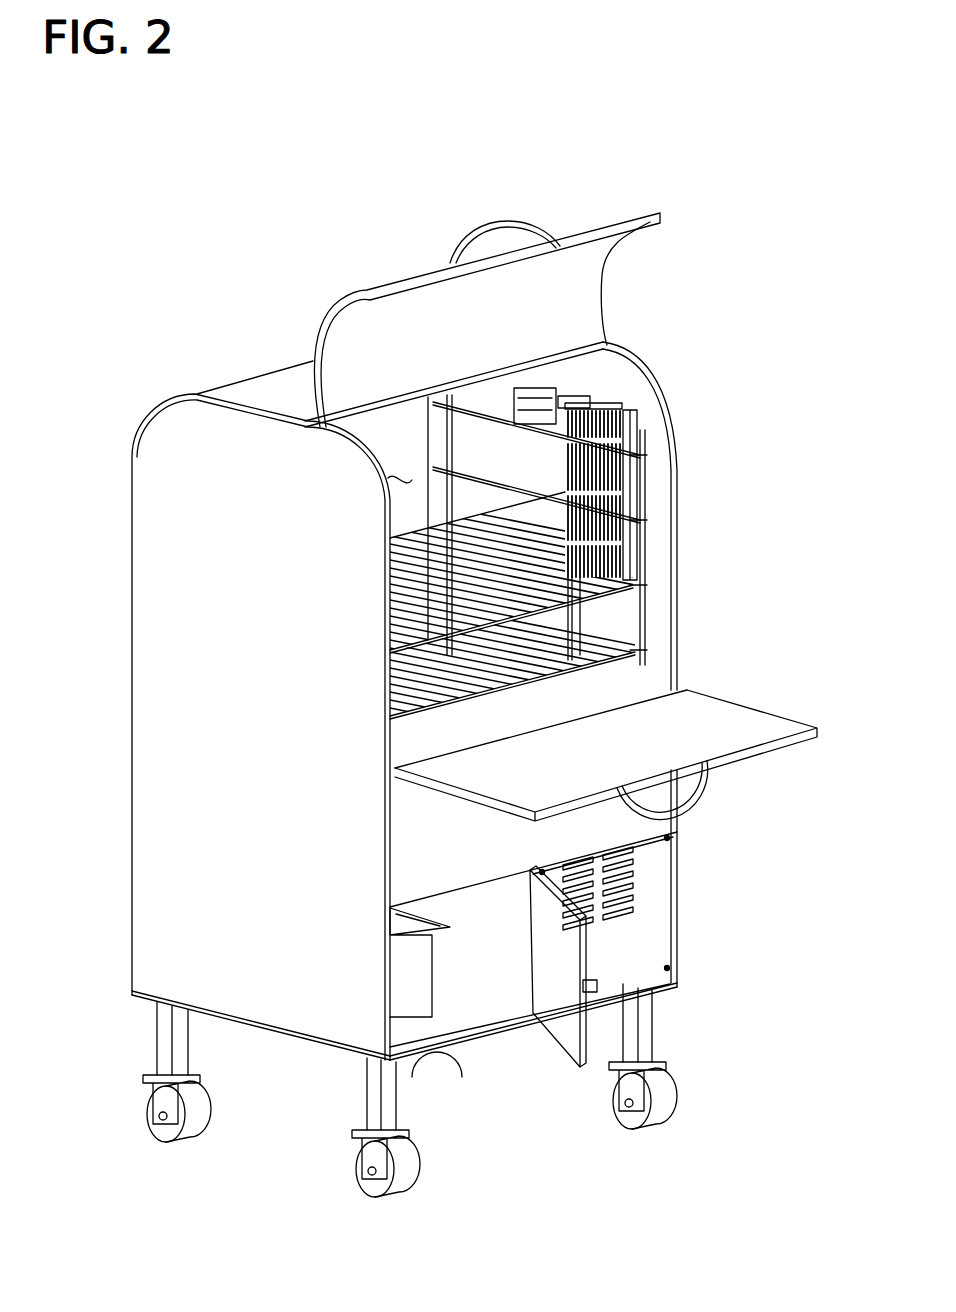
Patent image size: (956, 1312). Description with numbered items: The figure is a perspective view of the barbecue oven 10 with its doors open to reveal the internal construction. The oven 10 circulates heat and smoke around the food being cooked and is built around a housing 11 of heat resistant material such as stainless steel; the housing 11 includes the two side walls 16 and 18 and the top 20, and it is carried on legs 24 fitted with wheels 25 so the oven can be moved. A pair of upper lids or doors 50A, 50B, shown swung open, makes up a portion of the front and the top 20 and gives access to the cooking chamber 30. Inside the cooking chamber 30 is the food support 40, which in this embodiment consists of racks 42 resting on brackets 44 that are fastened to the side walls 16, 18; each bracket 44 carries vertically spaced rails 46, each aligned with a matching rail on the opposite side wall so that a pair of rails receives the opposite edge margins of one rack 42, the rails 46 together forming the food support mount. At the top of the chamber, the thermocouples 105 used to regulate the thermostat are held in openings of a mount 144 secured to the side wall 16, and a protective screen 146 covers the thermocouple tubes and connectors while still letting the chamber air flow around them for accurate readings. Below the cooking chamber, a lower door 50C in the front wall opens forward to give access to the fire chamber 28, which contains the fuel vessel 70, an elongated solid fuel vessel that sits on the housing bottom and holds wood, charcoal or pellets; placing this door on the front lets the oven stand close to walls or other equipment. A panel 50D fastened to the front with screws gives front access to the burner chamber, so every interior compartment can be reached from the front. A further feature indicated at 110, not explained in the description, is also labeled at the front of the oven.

The barbecue oven 10 is at (750, 134).
The housing 11 is at (124, 412).
The side wall 16 is at (673, 420).
The side wall 18 is at (187, 740).
The top 20 is at (270, 397).
The legs 24 is at (163, 1040).
The wheels 25 is at (155, 1133).
The fire chamber 28 is at (473, 943).
The cooking chamber 30 is at (560, 510).
The food support 40 is at (449, 733).
The racks 42 is at (428, 713).
The brackets 44 is at (643, 623).
The rails 46 is at (507, 527).
The upper door 50A is at (593, 226).
The upper door 50B is at (768, 728).
The lower door 50C is at (567, 1037).
The panel 50D is at (653, 918).
The fuel vessel 70 is at (403, 1008).
The thermocouples 105 is at (587, 397).
The front opening 110 is at (614, 689).
The mount 144 is at (640, 390).
The protective screen 146 is at (610, 400).